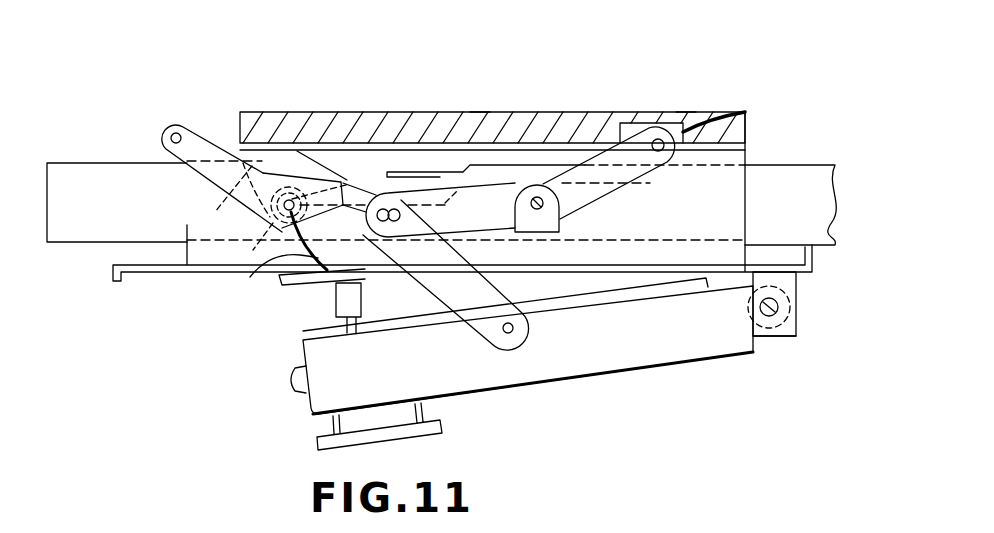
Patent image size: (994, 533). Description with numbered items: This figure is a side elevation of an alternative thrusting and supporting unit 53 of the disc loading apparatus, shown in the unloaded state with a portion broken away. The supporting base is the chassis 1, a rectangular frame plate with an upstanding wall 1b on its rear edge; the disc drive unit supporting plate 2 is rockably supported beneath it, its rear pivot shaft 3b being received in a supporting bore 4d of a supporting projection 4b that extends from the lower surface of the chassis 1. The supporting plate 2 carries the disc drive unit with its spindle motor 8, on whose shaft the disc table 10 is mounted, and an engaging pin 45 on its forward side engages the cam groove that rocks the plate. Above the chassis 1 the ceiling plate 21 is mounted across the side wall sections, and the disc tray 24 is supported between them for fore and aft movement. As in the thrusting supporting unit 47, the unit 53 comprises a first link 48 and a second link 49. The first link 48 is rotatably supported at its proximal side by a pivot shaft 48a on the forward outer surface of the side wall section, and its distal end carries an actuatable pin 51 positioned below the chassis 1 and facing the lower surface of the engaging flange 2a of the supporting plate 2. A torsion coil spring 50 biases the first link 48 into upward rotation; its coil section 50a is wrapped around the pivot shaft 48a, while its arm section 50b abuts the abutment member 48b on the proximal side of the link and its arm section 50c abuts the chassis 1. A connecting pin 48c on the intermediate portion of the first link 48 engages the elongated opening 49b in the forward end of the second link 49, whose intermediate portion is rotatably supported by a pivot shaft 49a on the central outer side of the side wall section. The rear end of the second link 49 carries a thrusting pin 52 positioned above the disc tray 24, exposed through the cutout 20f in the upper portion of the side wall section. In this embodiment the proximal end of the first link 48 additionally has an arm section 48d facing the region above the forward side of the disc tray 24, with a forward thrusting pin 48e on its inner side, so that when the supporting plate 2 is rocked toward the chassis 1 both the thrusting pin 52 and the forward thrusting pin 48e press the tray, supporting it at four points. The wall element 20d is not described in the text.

The chassis 1 is at (213, 273).
The upstanding wall 1b is at (813, 255).
The disc drive unit supporting plate 2 is at (492, 373).
The engaging flange 2a is at (610, 306).
The pivot shaft 3b is at (785, 318).
The supporting projection 4b is at (781, 336).
The supporting bore 4d is at (780, 305).
The spindle motor 8 is at (437, 421).
The disc table 10 is at (285, 283).
The holder bar 20d is at (478, 112).
The cutout 20f is at (742, 111).
The ceiling plate 21 is at (582, 118).
The disc tray 24 is at (97, 178).
The engaging pin 45 is at (285, 388).
The thrusting supporting unit 47 is at (689, 90).
The first link 48 is at (428, 282).
The pivot shaft 48a is at (285, 206).
The abutment member 48b is at (297, 173).
The connecting pin 48c is at (394, 221).
The arm section 48d is at (205, 148).
The forward thrusting pin 48e is at (175, 132).
The second link 49 is at (586, 201).
The pivot shaft 49a is at (560, 220).
The elongated opening 49b is at (410, 217).
The torsion coil spring 50 is at (322, 185).
The coil section 50a is at (258, 245).
The arm section 50b is at (355, 182).
The arm section 50c is at (290, 273).
The actuatable pin 51 is at (513, 327).
The thrusting pin 52 is at (693, 112).
The thrusting and supporting unit 53 is at (483, 90).